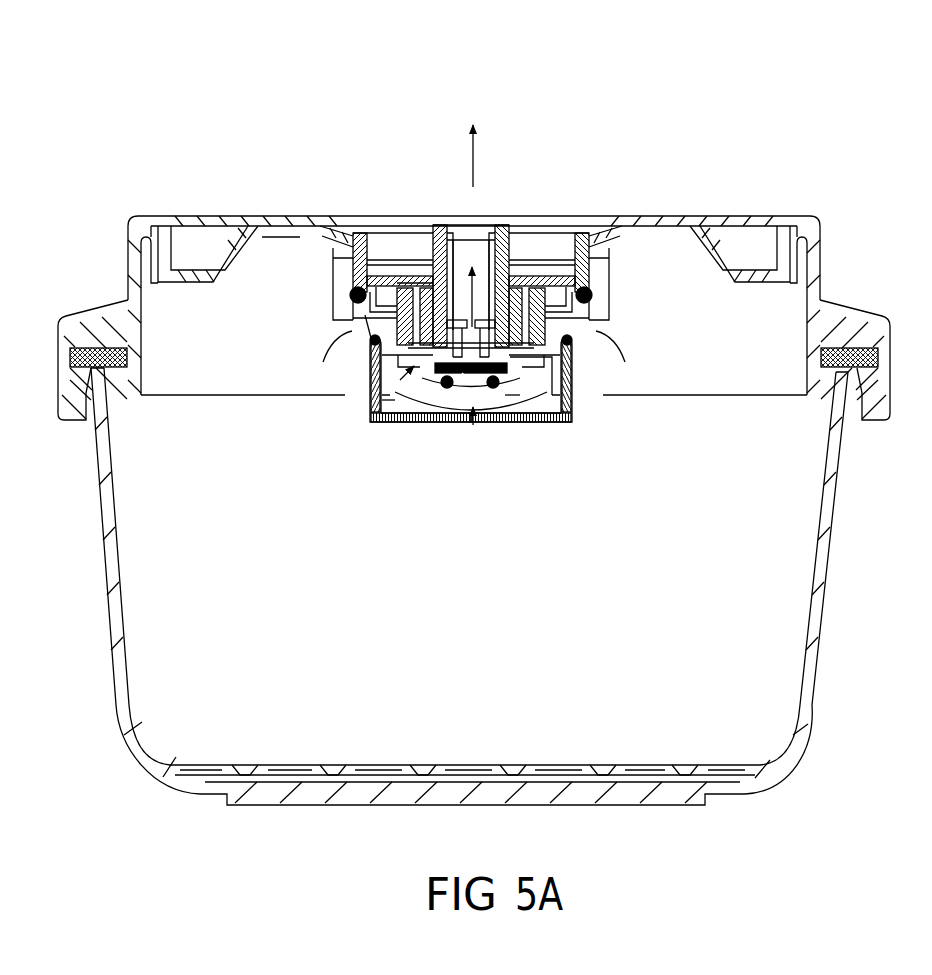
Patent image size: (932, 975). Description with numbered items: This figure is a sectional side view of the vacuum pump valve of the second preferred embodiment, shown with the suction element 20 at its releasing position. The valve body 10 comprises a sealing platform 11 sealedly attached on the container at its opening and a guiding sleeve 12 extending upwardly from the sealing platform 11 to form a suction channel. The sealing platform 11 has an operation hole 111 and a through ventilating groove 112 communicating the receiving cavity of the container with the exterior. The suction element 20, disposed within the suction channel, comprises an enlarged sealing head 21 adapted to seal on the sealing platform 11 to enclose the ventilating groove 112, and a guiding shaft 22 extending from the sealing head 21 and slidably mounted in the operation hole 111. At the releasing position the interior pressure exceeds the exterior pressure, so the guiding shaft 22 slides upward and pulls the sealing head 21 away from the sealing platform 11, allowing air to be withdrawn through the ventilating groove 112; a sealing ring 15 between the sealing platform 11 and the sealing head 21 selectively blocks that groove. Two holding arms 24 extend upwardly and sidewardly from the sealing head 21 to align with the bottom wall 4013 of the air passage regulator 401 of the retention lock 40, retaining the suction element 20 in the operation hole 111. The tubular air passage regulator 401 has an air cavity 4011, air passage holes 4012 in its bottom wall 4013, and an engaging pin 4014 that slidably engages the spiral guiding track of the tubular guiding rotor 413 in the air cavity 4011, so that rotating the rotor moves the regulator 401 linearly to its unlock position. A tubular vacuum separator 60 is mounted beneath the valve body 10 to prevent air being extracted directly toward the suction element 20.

The valve body 10 is at (613, 302).
The guiding sleeve 12 is at (545, 262).
The retention lock 40 is at (380, 246).
The air cavity 4011 is at (456, 274).
The bottom wall 4013 is at (515, 283).
The engaging pin 4014 is at (300, 228).
The air passage regulator 401 is at (352, 302).
The holding arms 24 is at (495, 336).
The enlarged sealing head 21 is at (410, 283).
The suction element 20 is at (572, 368).
The sealing platform 11 is at (405, 405).
The guiding rotor 413 is at (372, 385).
The air passage holes 4012 is at (392, 412).
The guiding shaft 22 is at (466, 376).
The sealing ring 15 is at (499, 387).
The operation hole 111 is at (473, 415).
The ventilating groove 112 is at (512, 398).
The vacuum separator 60 is at (528, 368).